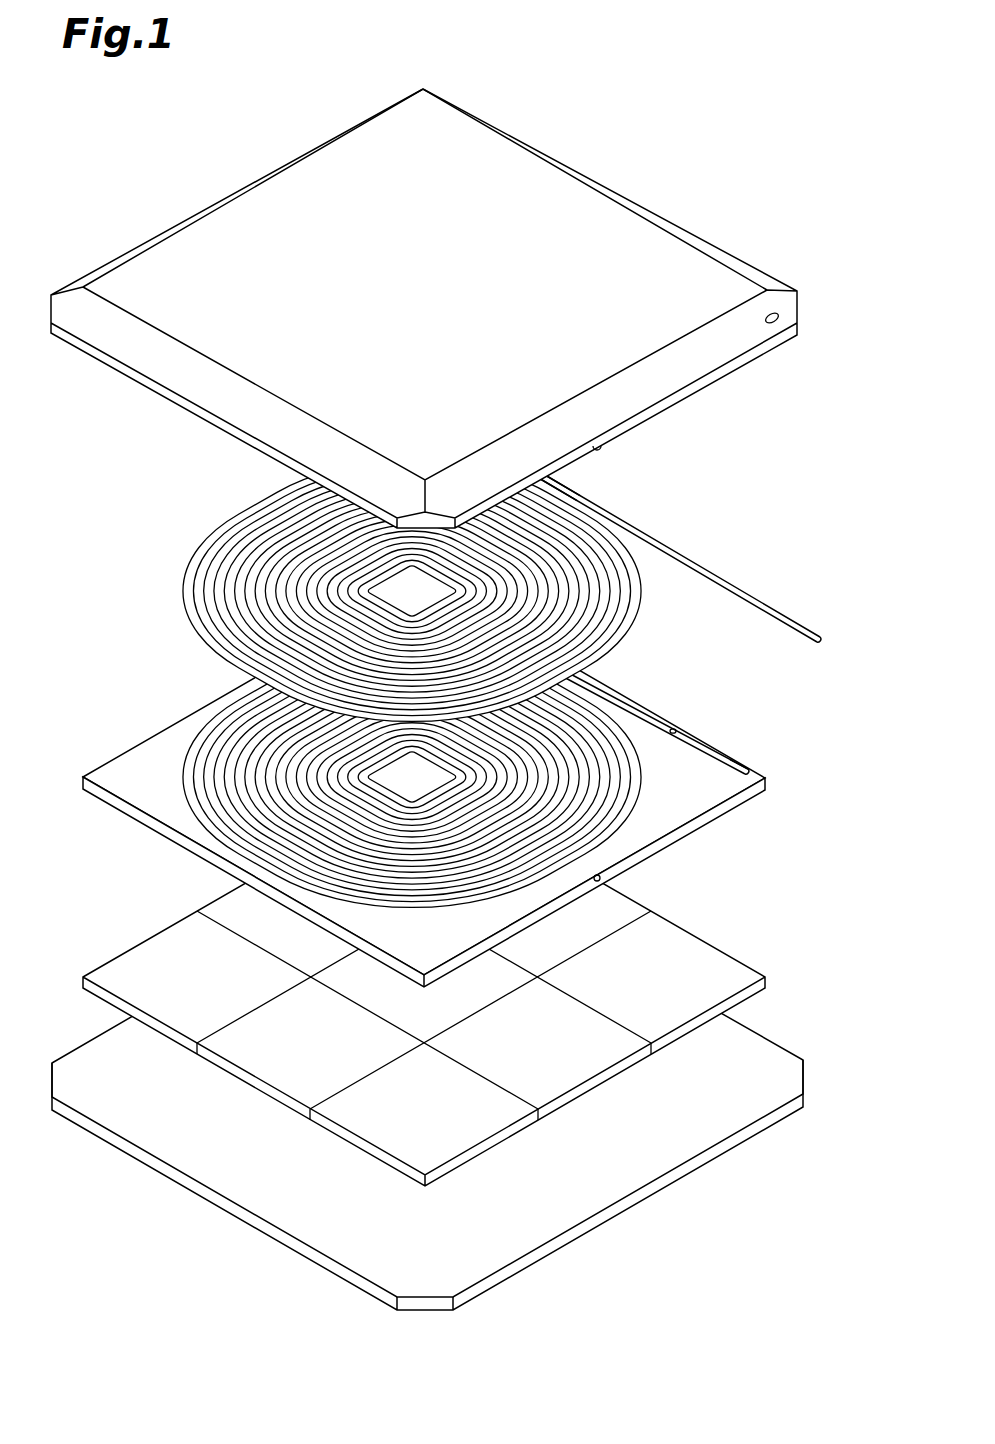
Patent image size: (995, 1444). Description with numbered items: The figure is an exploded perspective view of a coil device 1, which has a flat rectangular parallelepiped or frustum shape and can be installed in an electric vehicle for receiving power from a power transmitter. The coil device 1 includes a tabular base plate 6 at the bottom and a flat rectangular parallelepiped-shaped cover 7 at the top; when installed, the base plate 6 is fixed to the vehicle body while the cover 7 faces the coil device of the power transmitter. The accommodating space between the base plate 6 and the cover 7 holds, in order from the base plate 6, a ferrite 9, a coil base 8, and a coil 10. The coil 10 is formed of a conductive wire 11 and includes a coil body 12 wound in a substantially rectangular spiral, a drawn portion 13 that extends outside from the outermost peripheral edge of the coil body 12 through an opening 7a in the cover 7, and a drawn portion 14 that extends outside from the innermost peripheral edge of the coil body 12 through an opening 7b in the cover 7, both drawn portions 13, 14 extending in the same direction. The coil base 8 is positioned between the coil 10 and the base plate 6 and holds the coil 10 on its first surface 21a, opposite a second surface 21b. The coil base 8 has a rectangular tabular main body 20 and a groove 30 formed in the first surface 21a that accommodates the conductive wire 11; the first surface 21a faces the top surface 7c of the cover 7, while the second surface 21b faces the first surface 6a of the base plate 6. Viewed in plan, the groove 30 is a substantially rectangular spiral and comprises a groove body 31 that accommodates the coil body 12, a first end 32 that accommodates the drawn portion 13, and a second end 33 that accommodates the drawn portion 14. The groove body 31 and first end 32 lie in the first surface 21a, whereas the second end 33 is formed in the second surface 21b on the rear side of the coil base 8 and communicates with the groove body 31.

The coil device 1 is at (806, 130).
The base plate 6 is at (320, 1272).
The first surface of the base plate 6a is at (305, 1222).
The cover 7 is at (608, 184).
The opening 7a is at (781, 318).
The opening 7b is at (600, 449).
The top surface of the cover 7c is at (512, 160).
The coil base 8 is at (110, 842).
The ferrite 9 is at (737, 952).
The coil 10 is at (176, 604).
The conductive wire 11 is at (637, 557).
The coil body 12 is at (642, 627).
The drawn portion 13 is at (765, 594).
The drawn portion 14 is at (646, 717).
The main body 20 is at (190, 860).
The first surface 21a is at (680, 803).
The second surface 21b is at (675, 847).
The groove 30 is at (182, 745).
The groove body 31 is at (183, 773).
The first end 32 is at (728, 766).
The second end 33 is at (603, 878).